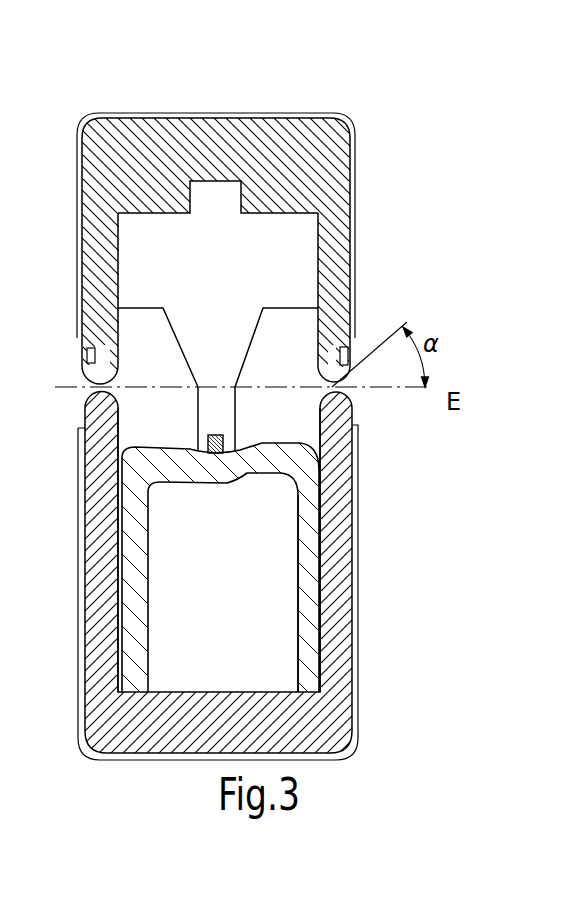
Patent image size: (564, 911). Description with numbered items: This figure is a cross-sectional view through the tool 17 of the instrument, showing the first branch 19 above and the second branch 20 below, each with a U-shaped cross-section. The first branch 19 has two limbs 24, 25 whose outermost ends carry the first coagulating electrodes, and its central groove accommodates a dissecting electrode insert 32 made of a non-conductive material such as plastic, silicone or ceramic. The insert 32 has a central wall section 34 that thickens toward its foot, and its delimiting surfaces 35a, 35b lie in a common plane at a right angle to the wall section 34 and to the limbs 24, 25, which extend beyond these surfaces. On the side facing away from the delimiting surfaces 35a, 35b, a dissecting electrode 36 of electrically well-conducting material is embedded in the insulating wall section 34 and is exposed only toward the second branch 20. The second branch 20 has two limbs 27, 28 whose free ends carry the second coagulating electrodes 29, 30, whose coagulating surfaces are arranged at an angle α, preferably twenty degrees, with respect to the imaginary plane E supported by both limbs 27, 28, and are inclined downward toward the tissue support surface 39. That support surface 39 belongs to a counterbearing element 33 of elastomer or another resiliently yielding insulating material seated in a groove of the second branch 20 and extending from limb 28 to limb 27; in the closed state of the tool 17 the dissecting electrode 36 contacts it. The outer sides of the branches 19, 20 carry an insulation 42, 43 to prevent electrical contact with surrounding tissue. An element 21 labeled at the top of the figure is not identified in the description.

The tool 17 is at (267, 384).
The first branch 19 is at (277, 158).
The second branch 20 is at (313, 720).
The actuating end 21 is at (346, 5).
The limb 24 is at (337, 263).
The limb 25 is at (98, 241).
The limb 27 is at (333, 495).
The limb 28 is at (103, 463).
The second coagulating electrode 29 is at (335, 392).
The second coagulating electrode 30 is at (100, 394).
The dissecting electrode insert 32 is at (236, 283).
The counterbearing element 33 is at (310, 612).
The wall section 34 is at (218, 387).
The delimiting surface 35a is at (143, 308).
The delimiting surface 35b is at (335, 315).
The dissecting electrode 36 is at (216, 465).
The tissue support surface 39 is at (158, 444).
The insulation 42 is at (355, 188).
The insulation 43 is at (357, 556).